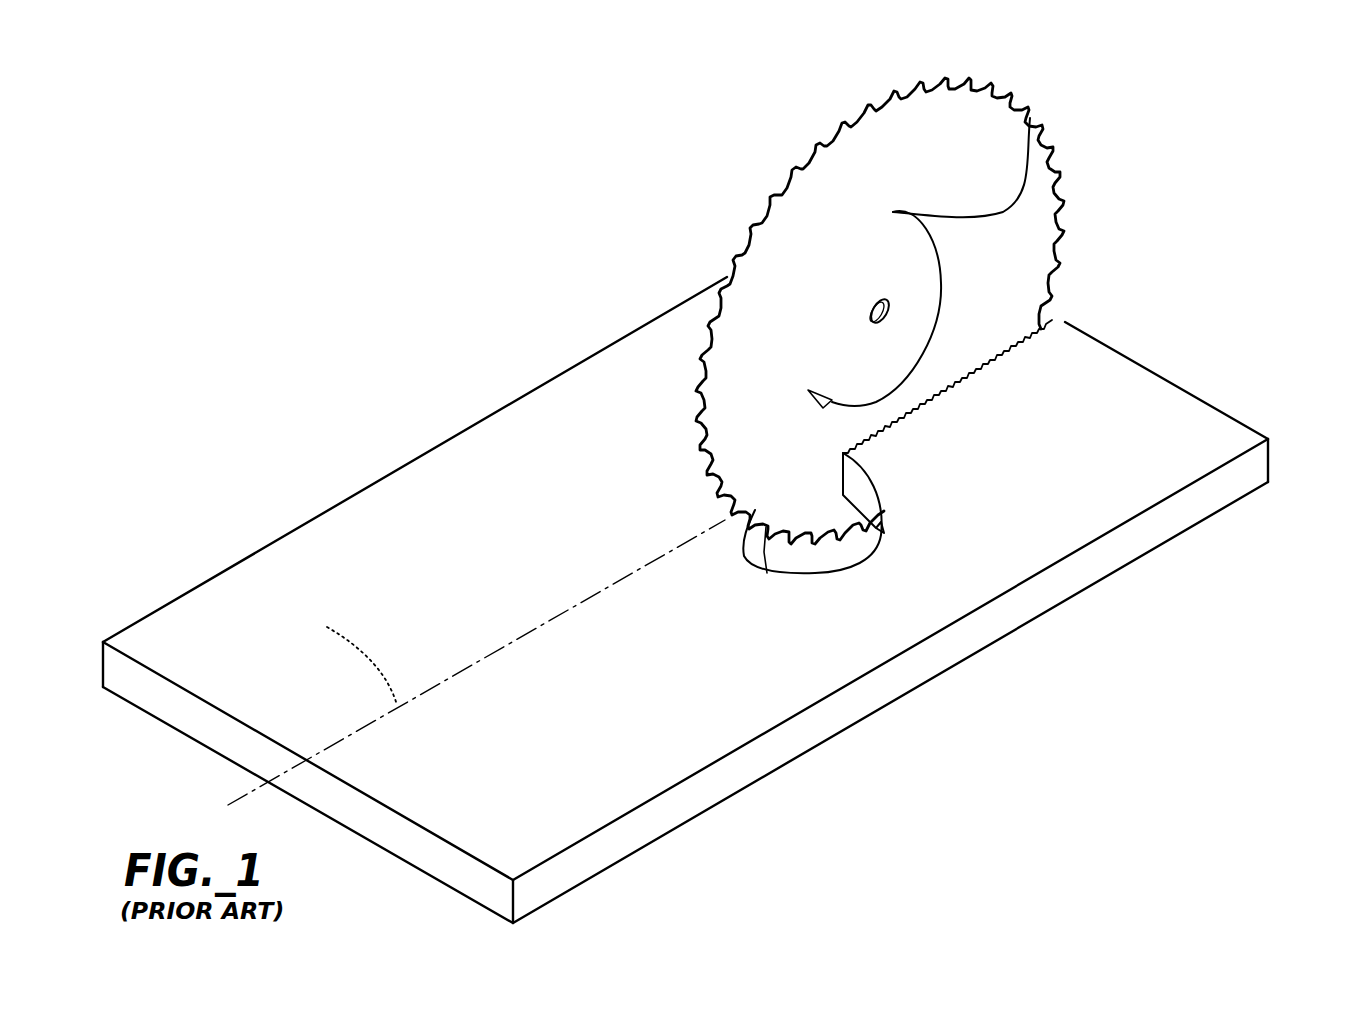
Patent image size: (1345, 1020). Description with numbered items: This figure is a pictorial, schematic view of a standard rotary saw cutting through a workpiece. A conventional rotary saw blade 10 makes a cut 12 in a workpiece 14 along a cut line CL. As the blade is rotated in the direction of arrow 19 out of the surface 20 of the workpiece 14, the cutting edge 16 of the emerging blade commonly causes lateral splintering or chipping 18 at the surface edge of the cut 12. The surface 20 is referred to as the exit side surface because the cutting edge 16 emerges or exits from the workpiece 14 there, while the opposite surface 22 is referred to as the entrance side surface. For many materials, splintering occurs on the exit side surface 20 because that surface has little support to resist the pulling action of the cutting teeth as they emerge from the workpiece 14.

The rotary saw blade 10 is at (925, 300).
The cut 12 is at (1150, 308).
The workpiece 14 is at (1302, 372).
The cutting edge 16 is at (828, 132).
The splintering or chipping 18 is at (1067, 707).
The arrow 19 is at (1130, 198).
The surface 20 is at (657, 614).
The opposite surface 22 is at (1227, 572).